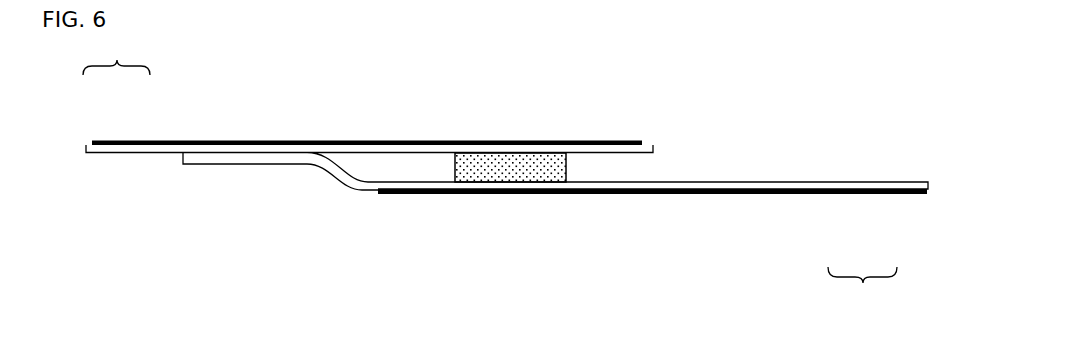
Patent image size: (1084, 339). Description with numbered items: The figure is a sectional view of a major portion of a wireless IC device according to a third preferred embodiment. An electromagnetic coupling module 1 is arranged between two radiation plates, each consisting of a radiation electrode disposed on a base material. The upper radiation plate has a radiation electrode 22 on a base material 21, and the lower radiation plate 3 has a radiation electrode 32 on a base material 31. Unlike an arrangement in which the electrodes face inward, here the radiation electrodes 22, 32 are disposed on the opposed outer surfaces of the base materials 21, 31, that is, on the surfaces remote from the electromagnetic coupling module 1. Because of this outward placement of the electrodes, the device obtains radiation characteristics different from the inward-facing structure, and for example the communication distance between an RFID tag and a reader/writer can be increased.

The electromagnetic coupling module 1 is at (558, 172).
The base material 21 is at (92, 154).
The radiation electrode 22 is at (119, 141).
The base material 31 is at (818, 182).
The radiation electrode 32 is at (863, 194).
The radiation plate 3 is at (862, 291).